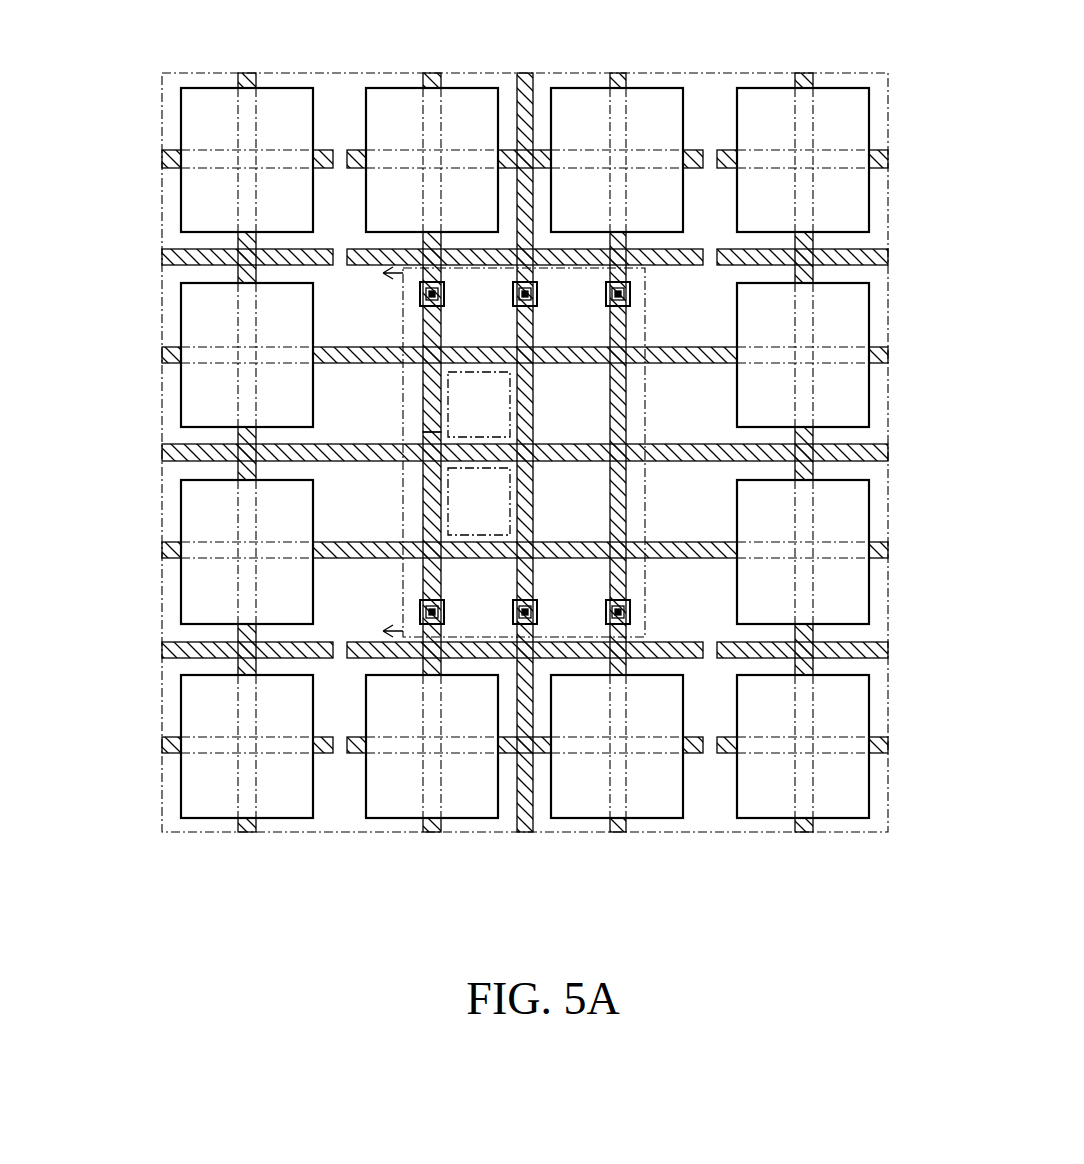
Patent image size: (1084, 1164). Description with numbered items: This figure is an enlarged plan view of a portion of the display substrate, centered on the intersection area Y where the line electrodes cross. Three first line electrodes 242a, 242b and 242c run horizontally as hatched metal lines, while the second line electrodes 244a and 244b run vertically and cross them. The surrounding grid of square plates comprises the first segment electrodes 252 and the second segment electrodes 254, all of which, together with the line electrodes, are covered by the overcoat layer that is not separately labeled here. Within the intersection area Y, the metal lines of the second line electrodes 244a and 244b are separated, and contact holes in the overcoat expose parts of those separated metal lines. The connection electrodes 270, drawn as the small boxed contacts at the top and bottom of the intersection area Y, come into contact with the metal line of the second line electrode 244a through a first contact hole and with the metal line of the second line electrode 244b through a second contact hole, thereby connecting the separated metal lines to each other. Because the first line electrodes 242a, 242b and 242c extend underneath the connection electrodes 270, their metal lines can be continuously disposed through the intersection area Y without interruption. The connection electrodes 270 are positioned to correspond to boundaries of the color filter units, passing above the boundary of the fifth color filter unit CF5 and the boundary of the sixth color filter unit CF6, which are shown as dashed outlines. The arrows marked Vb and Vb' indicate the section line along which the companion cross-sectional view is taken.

The first line electrode 242a is at (482, 337).
The first line electrode 242b is at (482, 468).
The first line electrode 242c is at (482, 571).
The second line electrode 244a is at (448, 222).
The second line electrode 244b is at (381, 666).
The fifth color filter unit CF5 is at (294, 404).
The sixth color filter unit CF6 is at (294, 501).
The first segment electrode 252 is at (247, 787).
The second segment electrode 254 is at (432, 787).
The connection electrode 270 is at (538, 591).
The intersection area Y is at (669, 452).
The section line end Vb is at (378, 276).
The section line end Vb' is at (378, 633).